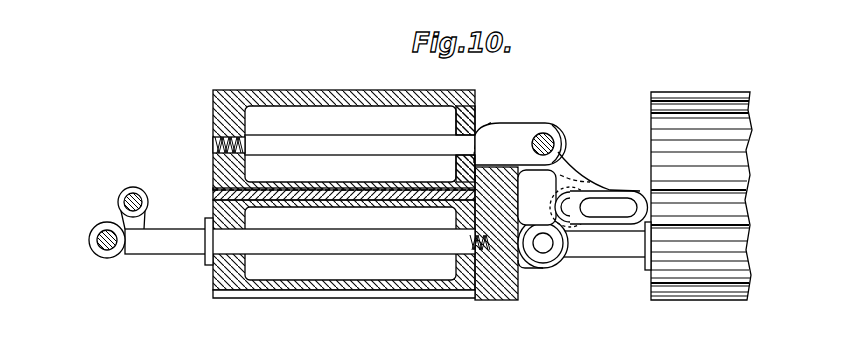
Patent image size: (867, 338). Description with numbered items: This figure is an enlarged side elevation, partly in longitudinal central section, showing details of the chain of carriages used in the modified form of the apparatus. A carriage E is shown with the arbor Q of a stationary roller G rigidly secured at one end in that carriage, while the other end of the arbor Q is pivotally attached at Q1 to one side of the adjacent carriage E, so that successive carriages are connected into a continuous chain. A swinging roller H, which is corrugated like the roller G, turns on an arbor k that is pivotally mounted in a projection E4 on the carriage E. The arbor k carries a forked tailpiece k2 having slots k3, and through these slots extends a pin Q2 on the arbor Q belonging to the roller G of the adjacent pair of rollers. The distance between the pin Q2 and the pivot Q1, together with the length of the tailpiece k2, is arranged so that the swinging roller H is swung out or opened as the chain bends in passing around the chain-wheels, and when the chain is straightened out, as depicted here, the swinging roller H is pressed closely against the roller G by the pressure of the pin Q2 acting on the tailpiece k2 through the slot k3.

The swinging roller H is at (366, 96).
The stationary roller G is at (326, 292).
The arbor k is at (326, 135).
The projection E4 is at (522, 124).
The carriage E is at (487, 203).
The arbor Q is at (600, 262).
The pivot Q1 is at (543, 253).
The pin Q2 is at (140, 198).
The forked tailpiece k2 is at (586, 188).
The slot k3 is at (618, 198).